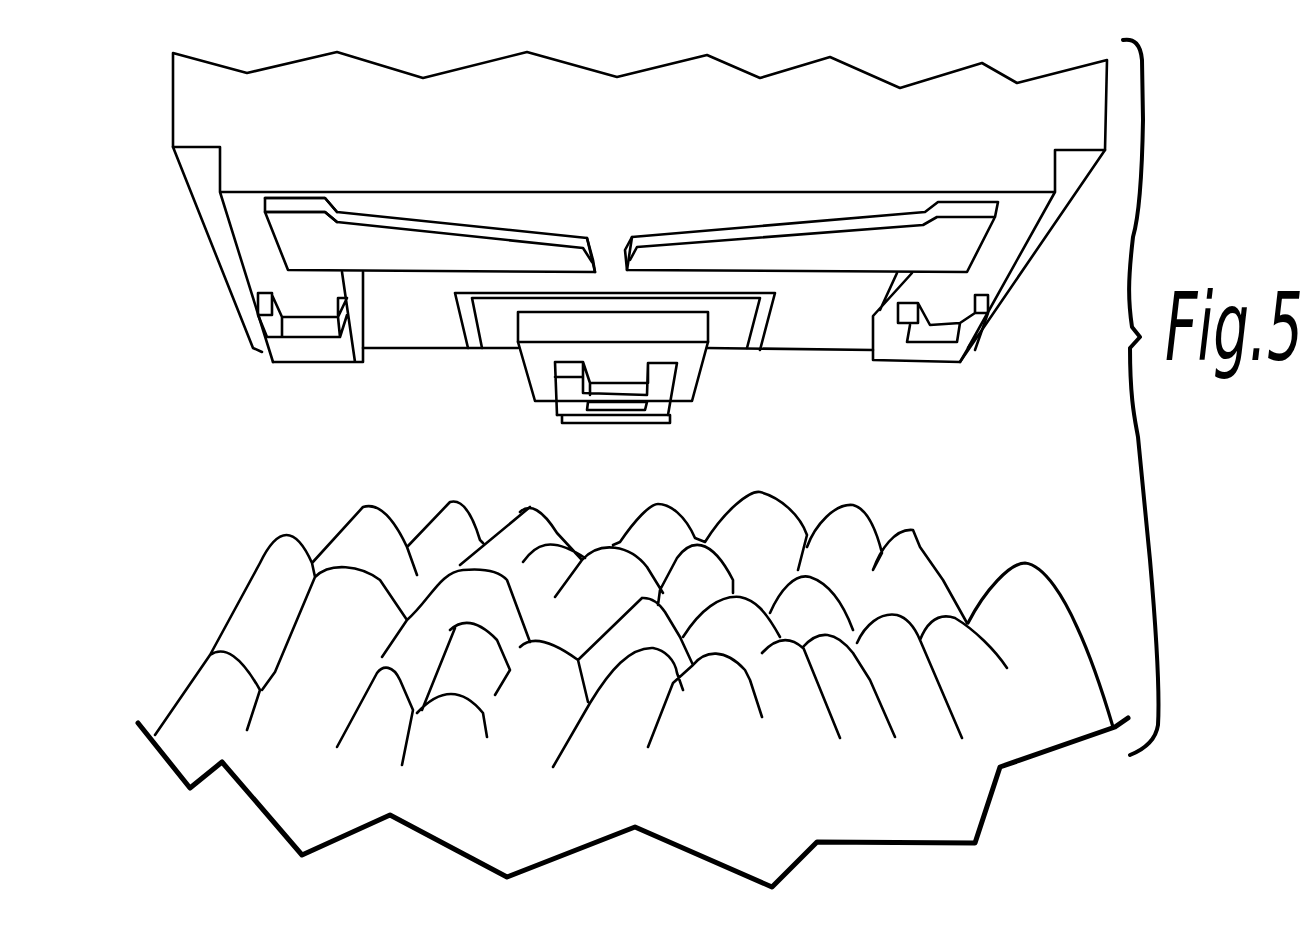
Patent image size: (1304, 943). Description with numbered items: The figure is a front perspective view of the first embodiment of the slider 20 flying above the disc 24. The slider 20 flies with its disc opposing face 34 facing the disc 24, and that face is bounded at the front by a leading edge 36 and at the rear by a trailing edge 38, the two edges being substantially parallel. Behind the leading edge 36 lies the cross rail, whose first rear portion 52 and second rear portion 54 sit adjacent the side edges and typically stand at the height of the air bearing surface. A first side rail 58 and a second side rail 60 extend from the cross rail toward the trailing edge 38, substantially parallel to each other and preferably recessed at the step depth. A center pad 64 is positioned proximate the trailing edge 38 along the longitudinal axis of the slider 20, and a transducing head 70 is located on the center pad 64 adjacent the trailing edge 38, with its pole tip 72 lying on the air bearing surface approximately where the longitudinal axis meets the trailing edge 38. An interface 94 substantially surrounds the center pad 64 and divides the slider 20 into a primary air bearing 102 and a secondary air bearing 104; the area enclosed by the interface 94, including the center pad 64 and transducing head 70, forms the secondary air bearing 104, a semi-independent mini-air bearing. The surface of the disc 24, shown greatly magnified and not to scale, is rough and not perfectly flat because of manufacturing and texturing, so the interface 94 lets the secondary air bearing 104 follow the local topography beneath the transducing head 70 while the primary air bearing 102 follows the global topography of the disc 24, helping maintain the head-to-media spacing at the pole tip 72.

The slider 20 is at (148, 204).
The disc 24 is at (267, 568).
The disc opposing face 34 is at (318, 227).
The leading edge 36 is at (207, 83).
The trailing edge 38 is at (388, 352).
The first rear portion 52 is at (827, 250).
The second rear portion 54 is at (367, 250).
The first side rail 58 is at (953, 290).
The second side rail 60 is at (277, 273).
The center pad 64 is at (560, 404).
The transducing head 70 is at (590, 420).
The pole tip 72 is at (628, 426).
The interface 94 is at (766, 338).
The primary air bearing 102 is at (622, 207).
The secondary air bearing 104 is at (497, 337).